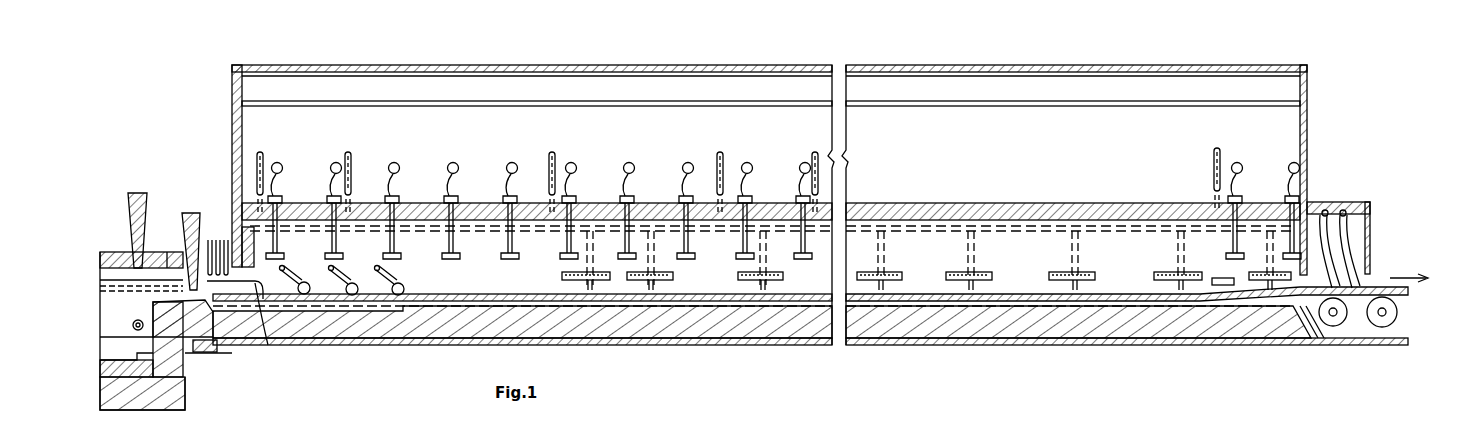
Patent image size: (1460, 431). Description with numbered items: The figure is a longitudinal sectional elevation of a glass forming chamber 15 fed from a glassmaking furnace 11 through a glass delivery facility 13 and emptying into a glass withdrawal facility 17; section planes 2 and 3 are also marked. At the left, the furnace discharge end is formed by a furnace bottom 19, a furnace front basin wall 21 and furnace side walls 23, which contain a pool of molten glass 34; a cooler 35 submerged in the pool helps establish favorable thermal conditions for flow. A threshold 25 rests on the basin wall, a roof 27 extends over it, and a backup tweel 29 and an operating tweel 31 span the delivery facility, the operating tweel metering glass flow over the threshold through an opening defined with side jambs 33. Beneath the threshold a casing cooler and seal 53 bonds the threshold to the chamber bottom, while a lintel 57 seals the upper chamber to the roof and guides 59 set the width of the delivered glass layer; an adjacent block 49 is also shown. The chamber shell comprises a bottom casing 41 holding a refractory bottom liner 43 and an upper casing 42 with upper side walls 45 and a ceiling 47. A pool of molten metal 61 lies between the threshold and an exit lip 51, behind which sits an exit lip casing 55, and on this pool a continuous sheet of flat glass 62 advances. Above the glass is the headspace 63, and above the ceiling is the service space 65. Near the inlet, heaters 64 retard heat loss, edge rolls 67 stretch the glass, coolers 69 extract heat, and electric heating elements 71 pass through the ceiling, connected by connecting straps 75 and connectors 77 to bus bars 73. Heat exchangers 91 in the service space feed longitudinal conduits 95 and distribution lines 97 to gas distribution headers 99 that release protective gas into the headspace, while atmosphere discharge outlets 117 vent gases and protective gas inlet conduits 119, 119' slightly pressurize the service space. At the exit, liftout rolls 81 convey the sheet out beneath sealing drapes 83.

The glassmaking furnace 11 is at (116, 212).
The glass delivery facility 13 is at (176, 188).
The glass forming chamber 15 is at (1320, 80).
The glass withdrawal facility 17 is at (1352, 136).
The furnace bottom 19 is at (125, 410).
The furnace front basin wall 21 is at (185, 380).
The furnace side walls 23 is at (100, 277).
The threshold 25 is at (214, 352).
The roof 27 is at (104, 252).
The backup tweel 29 is at (147, 216).
The operating tweel 31 is at (205, 222).
The side jambs 33 is at (167, 252).
The pool of molten glass 34 is at (130, 316).
The cooler 35 is at (118, 336).
The bottom casing 41 is at (688, 345).
The upper casing 42 is at (232, 90).
The bottom liner 43 is at (752, 325).
The upper side walls 45 is at (494, 283).
The ceiling 47 is at (908, 203).
The wedge block 49 is at (252, 330).
The exit lip 51 is at (1295, 325).
The casing cooler and seal 53 is at (205, 357).
The exit lip casing 55 is at (1316, 325).
The lintel 57 is at (240, 281).
The guides 59 is at (272, 345).
The pool of molten metal 61 is at (960, 306).
The continuous sheet of flat glass 62 is at (1002, 294).
The headspace 63 is at (932, 264).
The heaters 64 is at (220, 240).
The plenum or service space 65 is at (950, 149).
The edge rolls 67 is at (410, 282).
The coolers 69 is at (1232, 278).
The electric heating elements 71 is at (348, 258).
The bus bars 73 is at (402, 163).
The connecting straps 75 is at (400, 188).
The connectors 77 is at (388, 198).
The liftout rolls 81 is at (1400, 313).
The drapes 83 is at (1350, 250).
The heat exchangers 91 is at (555, 160).
The longitudinal conduits 95 is at (1036, 203).
The distribution lines 97 is at (1090, 232).
The gas distribution headers 99 is at (998, 272).
The atmosphere discharge outlets 117 is at (413, 246).
The protective gas inlet conduits 119 is at (738, 167).
The pin 119' is at (1178, 129).
The section line 2- 2 is at (295, 175).
The section line 3- 3 is at (735, 150).